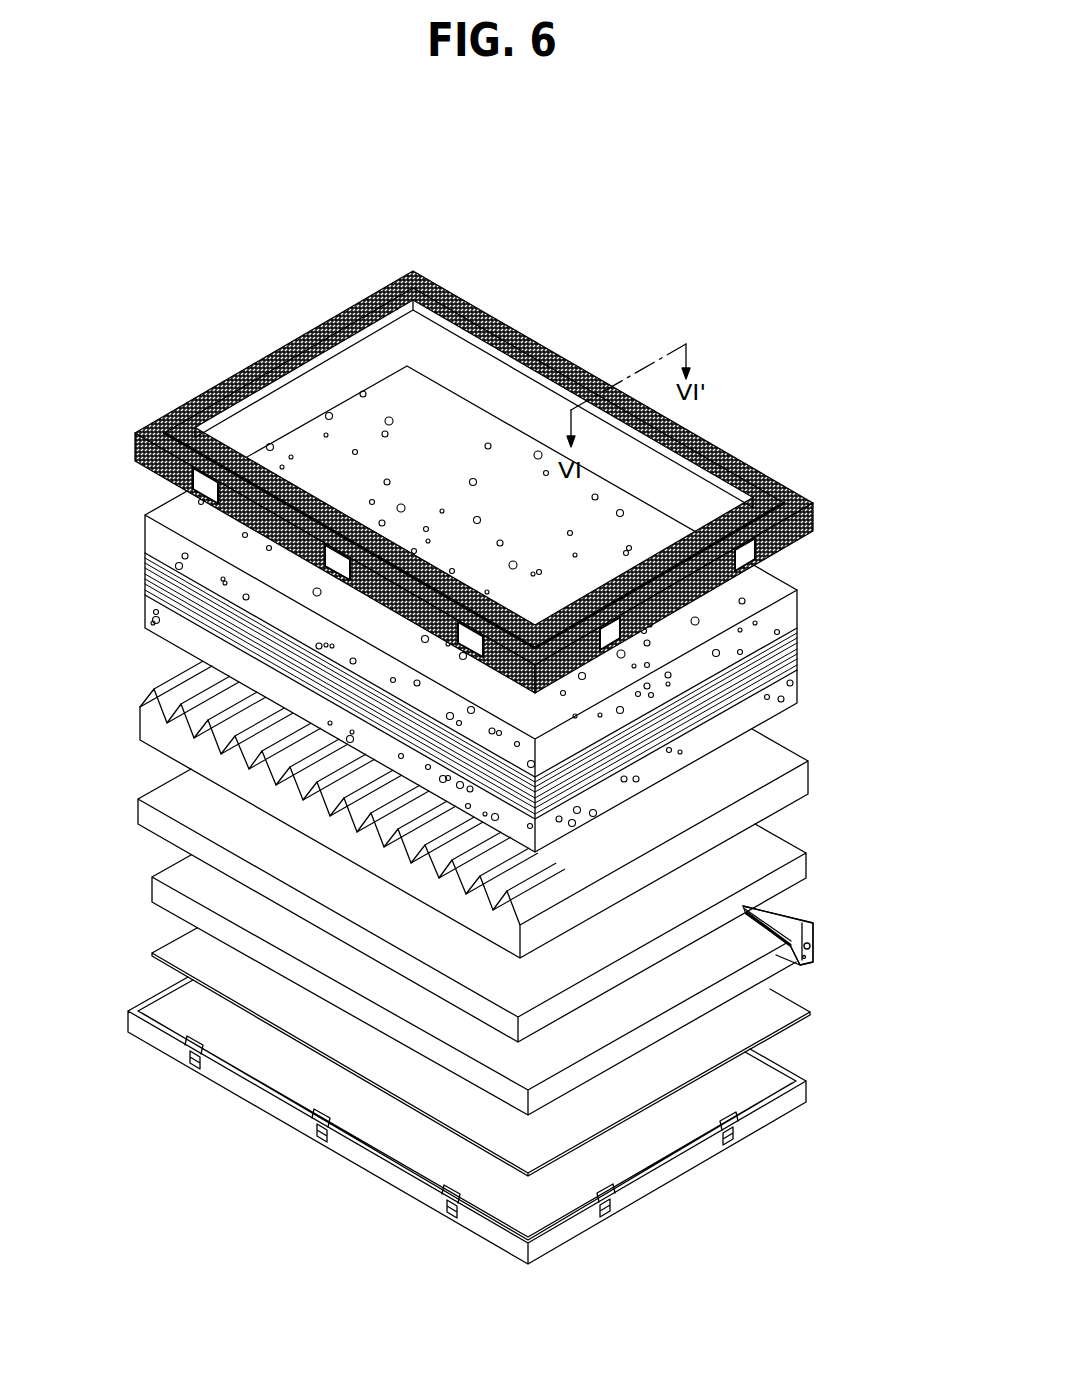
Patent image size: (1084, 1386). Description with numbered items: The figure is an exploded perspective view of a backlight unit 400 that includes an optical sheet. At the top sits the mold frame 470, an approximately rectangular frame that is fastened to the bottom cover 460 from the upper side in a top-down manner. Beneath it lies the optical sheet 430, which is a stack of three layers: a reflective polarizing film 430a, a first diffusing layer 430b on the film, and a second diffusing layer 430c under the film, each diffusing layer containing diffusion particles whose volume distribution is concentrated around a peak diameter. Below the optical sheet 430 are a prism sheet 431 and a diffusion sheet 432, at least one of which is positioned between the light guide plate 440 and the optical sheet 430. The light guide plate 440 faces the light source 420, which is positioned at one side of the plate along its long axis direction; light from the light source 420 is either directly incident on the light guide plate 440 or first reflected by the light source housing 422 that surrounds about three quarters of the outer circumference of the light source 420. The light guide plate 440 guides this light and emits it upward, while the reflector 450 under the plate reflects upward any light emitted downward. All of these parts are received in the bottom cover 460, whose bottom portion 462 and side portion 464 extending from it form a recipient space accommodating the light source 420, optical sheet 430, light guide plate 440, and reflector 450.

The backlight unit 400 is at (782, 207).
The light source 420 is at (817, 916).
The light source housing 422 is at (787, 918).
The optical sheet 430 is at (544, 609).
The reflective polarizing film 430a is at (818, 628).
The first diffusing layer 430b is at (818, 588).
The second diffusing layer 430c is at (818, 667).
The prism sheet 431 is at (153, 727).
The diffusion sheet 432 is at (142, 816).
The light guide plate 440 is at (152, 880).
The reflector 450 is at (150, 952).
The bottom cover 460 is at (471, 1120).
The bottom portion 462 is at (668, 1137).
The side portion 464 is at (668, 1170).
The mold frame 470 is at (818, 517).